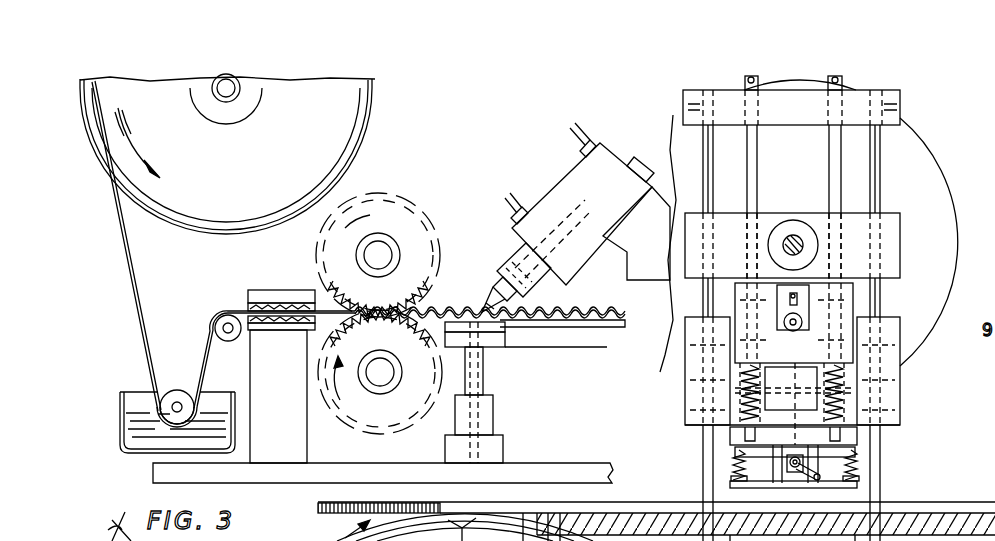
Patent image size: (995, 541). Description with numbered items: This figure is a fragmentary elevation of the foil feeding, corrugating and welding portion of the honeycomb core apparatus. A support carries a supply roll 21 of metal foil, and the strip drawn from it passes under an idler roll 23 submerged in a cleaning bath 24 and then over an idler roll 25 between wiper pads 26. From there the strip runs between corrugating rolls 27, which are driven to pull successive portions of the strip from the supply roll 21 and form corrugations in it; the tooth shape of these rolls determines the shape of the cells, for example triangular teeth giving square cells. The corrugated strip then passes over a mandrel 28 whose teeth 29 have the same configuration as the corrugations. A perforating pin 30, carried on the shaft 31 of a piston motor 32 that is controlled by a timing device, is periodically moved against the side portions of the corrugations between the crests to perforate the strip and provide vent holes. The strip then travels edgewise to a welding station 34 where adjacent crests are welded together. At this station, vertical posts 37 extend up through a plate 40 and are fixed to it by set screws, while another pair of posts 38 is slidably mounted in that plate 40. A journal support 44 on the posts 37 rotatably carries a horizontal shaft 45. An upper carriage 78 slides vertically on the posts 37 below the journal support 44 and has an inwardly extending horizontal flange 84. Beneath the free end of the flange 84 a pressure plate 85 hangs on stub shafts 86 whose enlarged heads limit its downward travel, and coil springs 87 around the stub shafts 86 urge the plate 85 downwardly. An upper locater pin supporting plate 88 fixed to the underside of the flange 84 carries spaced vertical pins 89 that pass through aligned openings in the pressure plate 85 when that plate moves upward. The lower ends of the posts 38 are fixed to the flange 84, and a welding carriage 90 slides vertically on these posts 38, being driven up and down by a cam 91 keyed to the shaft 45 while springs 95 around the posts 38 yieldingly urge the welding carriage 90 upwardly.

The supply roll 21 is at (227, 154).
The idler roll 23 is at (175, 392).
The cleaning bath 24 is at (122, 430).
The idler roll 25 is at (225, 343).
The wiper pads 26 is at (262, 301).
The corrugating rolls 27 is at (418, 224).
The mandrel 28 is at (486, 322).
The teeth 29 is at (500, 322).
The perforating pin 30 is at (481, 306).
The shaft 31 is at (500, 270).
The piston motor 32 is at (560, 195).
The welding station 34 is at (902, 458).
The vertical posts 37 is at (716, 172).
The posts 38 is at (757, 167).
The plate 40 is at (900, 104).
The journal support 44 is at (768, 222).
The horizontal shaft 45 is at (797, 238).
The upper carriage 78 is at (690, 388).
The horizontal flange 84 is at (735, 438).
The pressure plate 85 is at (730, 485).
The stub shafts 86 is at (735, 470).
The coil springs 87 is at (731, 478).
The upper locater pin supporting plate 88 is at (798, 486).
The vertical pins 89 is at (762, 470).
The welding carriage 90 is at (852, 305).
The cam 91 is at (955, 232).
The springs 95 is at (745, 395).